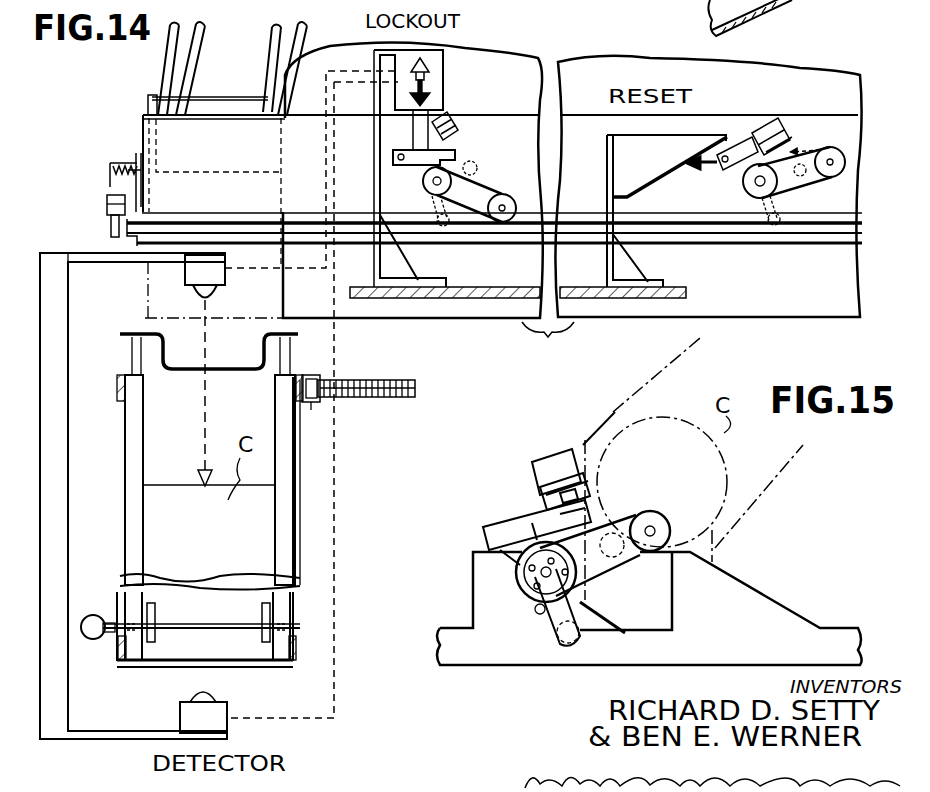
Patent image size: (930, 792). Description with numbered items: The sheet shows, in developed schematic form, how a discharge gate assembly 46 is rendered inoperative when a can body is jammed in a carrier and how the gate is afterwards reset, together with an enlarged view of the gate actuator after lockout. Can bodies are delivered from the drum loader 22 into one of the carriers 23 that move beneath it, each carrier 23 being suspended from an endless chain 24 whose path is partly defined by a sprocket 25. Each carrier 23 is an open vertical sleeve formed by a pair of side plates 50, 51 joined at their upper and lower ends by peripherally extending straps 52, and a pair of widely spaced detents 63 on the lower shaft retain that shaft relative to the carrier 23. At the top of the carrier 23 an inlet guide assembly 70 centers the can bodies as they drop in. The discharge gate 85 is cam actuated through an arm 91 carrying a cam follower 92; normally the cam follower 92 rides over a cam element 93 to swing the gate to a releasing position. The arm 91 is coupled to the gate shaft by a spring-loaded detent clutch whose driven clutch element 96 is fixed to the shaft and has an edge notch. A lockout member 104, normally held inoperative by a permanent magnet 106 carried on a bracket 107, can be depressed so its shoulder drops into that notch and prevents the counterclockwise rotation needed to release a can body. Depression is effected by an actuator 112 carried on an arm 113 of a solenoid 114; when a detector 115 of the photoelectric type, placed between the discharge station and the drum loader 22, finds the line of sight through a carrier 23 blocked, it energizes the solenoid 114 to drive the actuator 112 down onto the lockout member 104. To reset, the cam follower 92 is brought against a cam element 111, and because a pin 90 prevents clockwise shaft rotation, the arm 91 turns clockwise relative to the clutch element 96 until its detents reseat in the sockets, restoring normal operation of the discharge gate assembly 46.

In FIG. 15, the drum loader 22 is at (682, 376).
In FIG. 14, the carrier 23 is at (302, 490).
In FIG. 14, the endless chain 24 is at (318, 378).
In FIG. 14, the sprocket 25 is at (398, 399).
In FIG. 14, the discharge gate assembly 46 is at (458, 210).
In FIG. 14, the side plate 50 is at (130, 462).
In FIG. 14, the side plate 51 is at (290, 445).
In FIG. 14, the strap 52 is at (118, 395).
In FIG. 14, the detent 63 is at (262, 613).
In FIG. 14, the inlet guide assembly 70 is at (128, 320).
In FIG. 15, the discharge gate 85 is at (598, 628).
In FIG. 15, the pin 90 is at (538, 613).
In FIG. 14, the arm 91 is at (477, 170).
In FIG. 15, the arm 91 is at (622, 525).
In FIG. 14, the cam follower 92 is at (505, 223).
In FIG. 15, the cam follower 92 is at (672, 514).
In FIG. 15, the cam element 93 is at (620, 612).
In FIG. 15, the driven clutch element 96 is at (500, 586).
In FIG. 14, the lockout member 104 is at (410, 168).
In FIG. 15, the lockout member 104 is at (506, 520).
In FIG. 14, the permanent magnet 106 is at (782, 120).
In FIG. 15, the permanent magnet 106 is at (536, 490).
In FIG. 15, the bracket 107 is at (552, 455).
In FIG. 14, the cam element 111 is at (643, 172).
In FIG. 14, the actuator 112 is at (450, 147).
In FIG. 14, the arm 113 is at (413, 128).
In FIG. 14, the solenoid 114 is at (445, 78).
In FIG. 14, the detector 115 is at (178, 718).